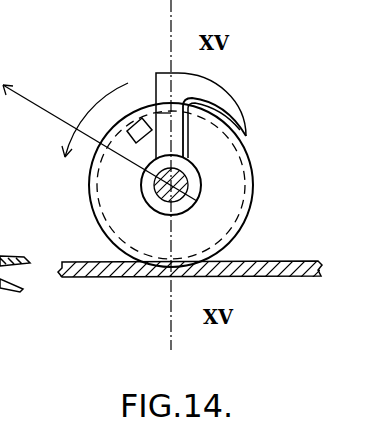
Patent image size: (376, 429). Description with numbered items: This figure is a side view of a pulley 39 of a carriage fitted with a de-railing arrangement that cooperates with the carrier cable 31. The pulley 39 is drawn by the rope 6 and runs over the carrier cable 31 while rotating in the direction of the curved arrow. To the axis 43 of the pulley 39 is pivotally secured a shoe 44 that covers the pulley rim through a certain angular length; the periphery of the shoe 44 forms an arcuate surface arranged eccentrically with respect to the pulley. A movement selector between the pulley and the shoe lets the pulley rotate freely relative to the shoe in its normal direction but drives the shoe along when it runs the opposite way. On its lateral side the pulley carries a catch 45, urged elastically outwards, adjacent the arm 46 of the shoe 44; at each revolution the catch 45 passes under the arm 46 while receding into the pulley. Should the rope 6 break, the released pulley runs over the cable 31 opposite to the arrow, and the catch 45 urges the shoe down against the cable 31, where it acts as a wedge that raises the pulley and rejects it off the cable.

The rope 6 is at (62, 120).
The carrier cable 31 is at (280, 262).
The pulley 39 is at (251, 192).
The axis 43 is at (197, 201).
The shoe 44 is at (204, 91).
The catch 45 is at (142, 121).
The arm 46 is at (190, 151).